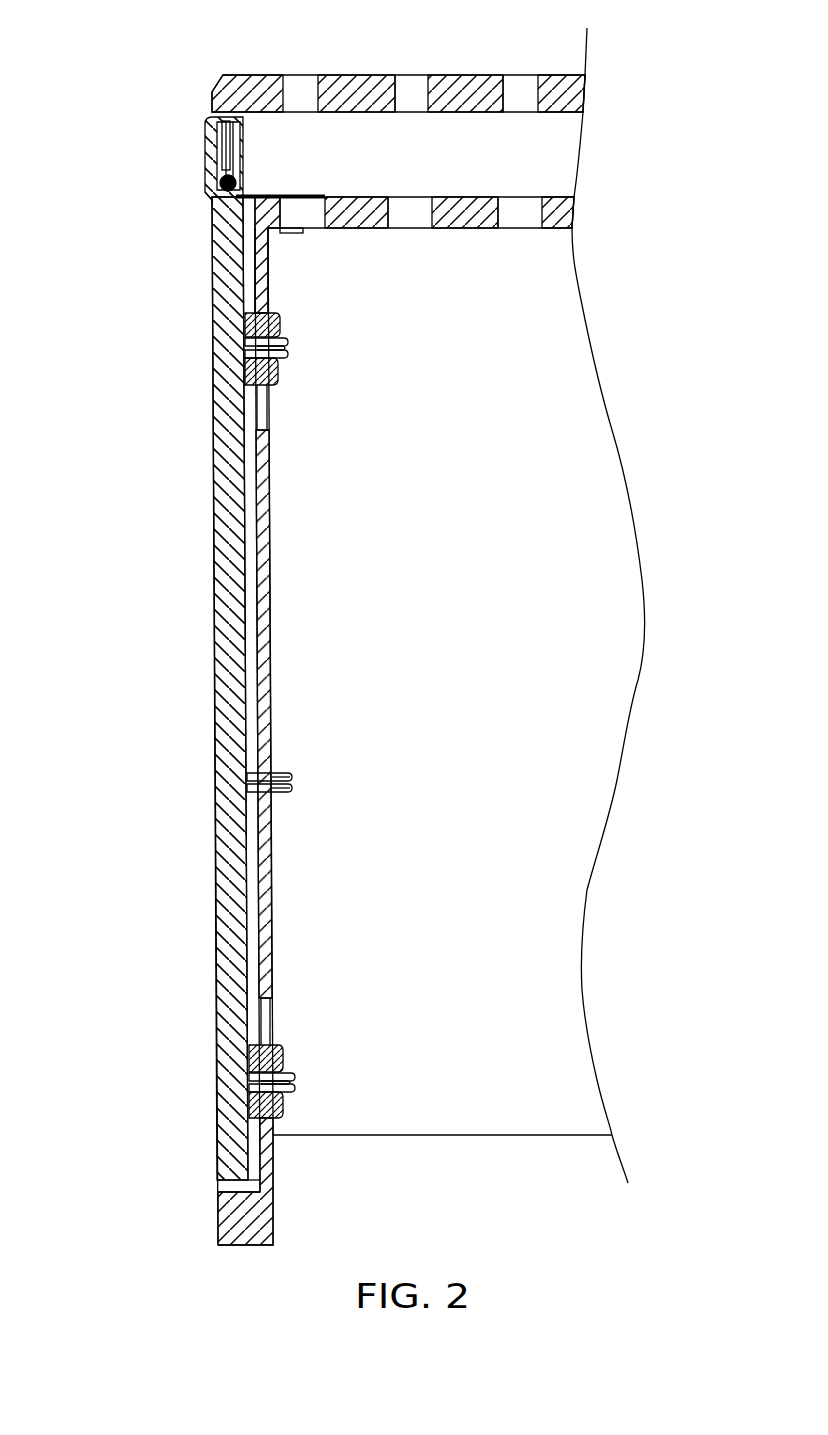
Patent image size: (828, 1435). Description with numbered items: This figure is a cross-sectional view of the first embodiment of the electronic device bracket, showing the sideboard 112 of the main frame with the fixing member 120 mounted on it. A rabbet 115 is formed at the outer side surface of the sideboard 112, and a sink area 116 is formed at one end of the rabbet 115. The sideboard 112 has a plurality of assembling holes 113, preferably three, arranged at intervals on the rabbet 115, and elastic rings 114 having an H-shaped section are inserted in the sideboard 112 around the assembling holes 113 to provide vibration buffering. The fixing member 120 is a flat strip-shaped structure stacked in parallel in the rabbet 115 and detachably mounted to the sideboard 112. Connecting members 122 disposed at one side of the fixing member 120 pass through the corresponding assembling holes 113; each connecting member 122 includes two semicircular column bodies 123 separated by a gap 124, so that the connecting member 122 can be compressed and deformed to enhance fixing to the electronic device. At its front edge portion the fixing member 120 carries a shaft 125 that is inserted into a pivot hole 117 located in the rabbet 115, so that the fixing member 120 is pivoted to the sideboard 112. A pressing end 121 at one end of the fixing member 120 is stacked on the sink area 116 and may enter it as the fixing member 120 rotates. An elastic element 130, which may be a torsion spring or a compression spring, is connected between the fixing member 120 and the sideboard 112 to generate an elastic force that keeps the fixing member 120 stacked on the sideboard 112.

The sideboard 112 is at (270, 607).
The assembling hole 113 is at (262, 416).
The elastic ring 114 is at (281, 331).
The rabbet 115 is at (250, 497).
The sink area 116 is at (270, 135).
The pivot hole 117 is at (221, 197).
The fixing member 120 is at (224, 446).
The pressing end 121 is at (208, 148).
The connecting member 122 is at (388, 697).
The semicircular column body 123 is at (287, 358).
The gap 124 is at (290, 349).
The shaft 125 is at (220, 183).
The elastic element 130 is at (228, 166).